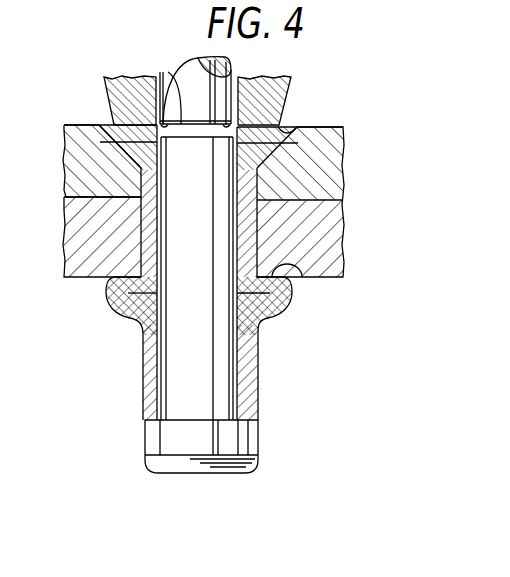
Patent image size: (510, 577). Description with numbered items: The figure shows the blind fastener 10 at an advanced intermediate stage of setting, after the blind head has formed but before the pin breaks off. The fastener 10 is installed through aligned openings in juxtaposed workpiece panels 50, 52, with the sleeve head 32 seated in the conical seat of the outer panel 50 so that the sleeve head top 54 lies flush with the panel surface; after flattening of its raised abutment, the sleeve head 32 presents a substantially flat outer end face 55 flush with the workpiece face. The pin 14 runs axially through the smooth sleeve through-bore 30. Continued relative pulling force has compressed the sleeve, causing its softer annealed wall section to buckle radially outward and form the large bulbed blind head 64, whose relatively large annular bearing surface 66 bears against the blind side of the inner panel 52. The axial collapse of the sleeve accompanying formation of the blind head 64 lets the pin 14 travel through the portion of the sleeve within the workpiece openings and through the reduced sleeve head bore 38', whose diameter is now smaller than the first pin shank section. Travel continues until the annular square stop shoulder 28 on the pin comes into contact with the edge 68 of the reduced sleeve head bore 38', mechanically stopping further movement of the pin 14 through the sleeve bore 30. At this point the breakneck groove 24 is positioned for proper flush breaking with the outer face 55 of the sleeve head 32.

The blind fastener 10 is at (65, 393).
The pin 14 is at (226, 400).
The breakneck groove 24 is at (226, 130).
The stop shoulder 28 is at (185, 137).
The sleeve through-bore 30 is at (240, 368).
The sleeve head 32 is at (297, 141).
The reduced sleeve head bore 38' is at (176, 87).
The outer workpiece panel 50 is at (80, 164).
The blind-side workpiece panel 52 is at (72, 233).
The sleeve head top 54 is at (292, 124).
The outer end face of sleeve head 55 is at (113, 120).
The bulbed blind head 64 is at (96, 308).
The annular bearing surface 66 is at (296, 280).
The edge of reduced sleeve head bore 68 is at (245, 170).